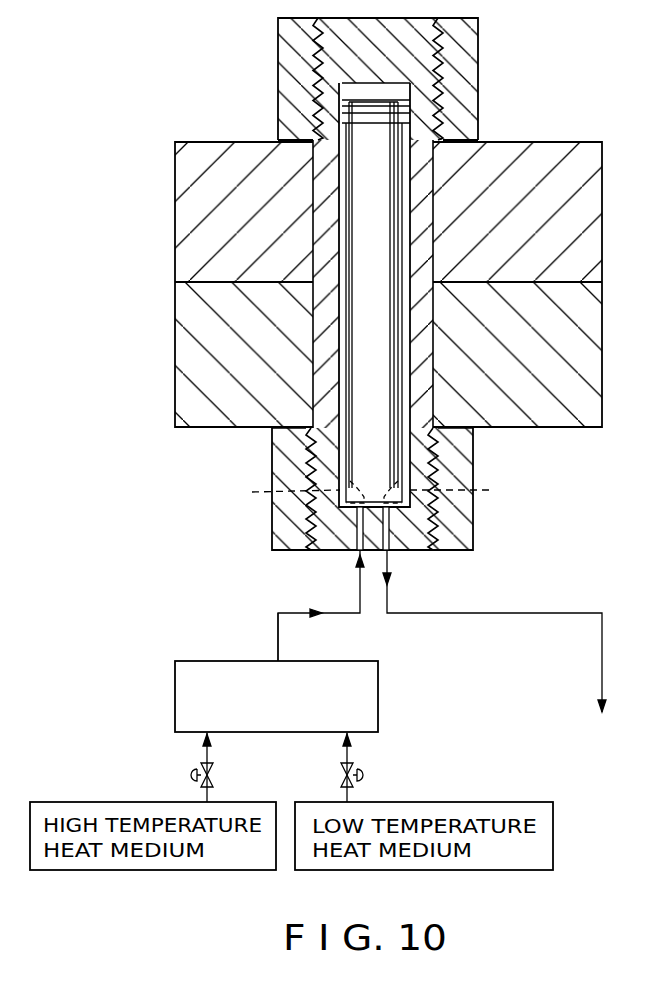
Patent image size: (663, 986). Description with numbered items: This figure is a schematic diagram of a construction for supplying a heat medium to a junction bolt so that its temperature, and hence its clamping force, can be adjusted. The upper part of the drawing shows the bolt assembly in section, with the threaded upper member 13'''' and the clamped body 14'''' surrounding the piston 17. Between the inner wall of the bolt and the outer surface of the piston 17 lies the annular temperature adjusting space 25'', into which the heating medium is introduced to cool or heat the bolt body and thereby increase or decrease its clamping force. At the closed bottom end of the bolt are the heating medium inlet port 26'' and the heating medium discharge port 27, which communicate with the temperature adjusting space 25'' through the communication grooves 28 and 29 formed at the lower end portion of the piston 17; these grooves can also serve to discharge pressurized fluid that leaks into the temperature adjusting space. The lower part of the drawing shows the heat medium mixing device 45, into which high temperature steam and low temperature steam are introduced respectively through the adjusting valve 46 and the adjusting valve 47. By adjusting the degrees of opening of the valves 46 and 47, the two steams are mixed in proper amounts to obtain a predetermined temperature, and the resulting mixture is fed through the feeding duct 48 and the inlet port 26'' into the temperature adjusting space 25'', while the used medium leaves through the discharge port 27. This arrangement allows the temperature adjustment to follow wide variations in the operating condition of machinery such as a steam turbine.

The upper nut 13'''' is at (420, 79).
The body block 14'''' is at (390, 260).
The piston 17 is at (353, 452).
The temperature adjusting space 25'' is at (426, 295).
The heating medium inlet port 26'' is at (321, 584).
The heating medium discharge port 27 is at (388, 534).
The communication groove 28 is at (453, 493).
The communication groove 29 is at (291, 493).
The heat medium mixing device 45 is at (380, 697).
The adjusting valve 46 is at (190, 775).
The adjusting valve 47 is at (370, 775).
The feeding duct 48 is at (277, 631).